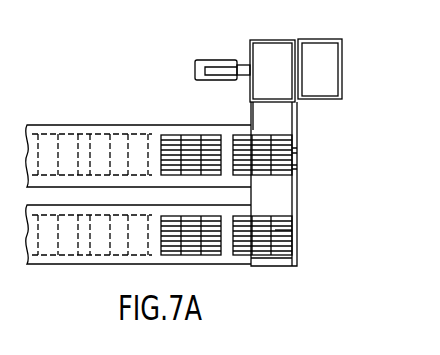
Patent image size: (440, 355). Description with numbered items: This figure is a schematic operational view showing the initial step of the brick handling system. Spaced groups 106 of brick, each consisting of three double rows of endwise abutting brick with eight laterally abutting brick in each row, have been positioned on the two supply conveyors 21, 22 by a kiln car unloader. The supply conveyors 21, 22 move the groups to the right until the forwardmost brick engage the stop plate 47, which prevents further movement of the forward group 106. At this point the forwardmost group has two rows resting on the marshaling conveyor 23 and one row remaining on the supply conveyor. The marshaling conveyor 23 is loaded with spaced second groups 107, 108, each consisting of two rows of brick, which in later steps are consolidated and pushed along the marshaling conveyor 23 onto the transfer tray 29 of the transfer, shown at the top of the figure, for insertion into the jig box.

The supply conveyor 21 is at (56, 127).
The supply conveyor 22 is at (70, 264).
The marshaling conveyor 23 is at (298, 189).
The transfer tray 29 is at (276, 40).
The stop plate 47 is at (295, 150).
The spaced groups 106 is at (173, 135).
The second group 107 is at (297, 167).
The second group 108 is at (285, 232).